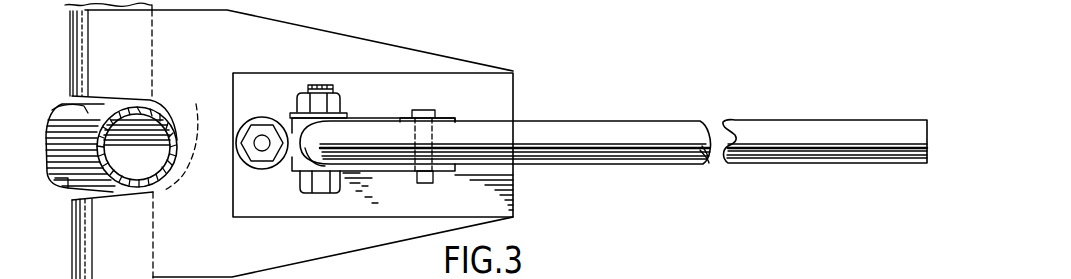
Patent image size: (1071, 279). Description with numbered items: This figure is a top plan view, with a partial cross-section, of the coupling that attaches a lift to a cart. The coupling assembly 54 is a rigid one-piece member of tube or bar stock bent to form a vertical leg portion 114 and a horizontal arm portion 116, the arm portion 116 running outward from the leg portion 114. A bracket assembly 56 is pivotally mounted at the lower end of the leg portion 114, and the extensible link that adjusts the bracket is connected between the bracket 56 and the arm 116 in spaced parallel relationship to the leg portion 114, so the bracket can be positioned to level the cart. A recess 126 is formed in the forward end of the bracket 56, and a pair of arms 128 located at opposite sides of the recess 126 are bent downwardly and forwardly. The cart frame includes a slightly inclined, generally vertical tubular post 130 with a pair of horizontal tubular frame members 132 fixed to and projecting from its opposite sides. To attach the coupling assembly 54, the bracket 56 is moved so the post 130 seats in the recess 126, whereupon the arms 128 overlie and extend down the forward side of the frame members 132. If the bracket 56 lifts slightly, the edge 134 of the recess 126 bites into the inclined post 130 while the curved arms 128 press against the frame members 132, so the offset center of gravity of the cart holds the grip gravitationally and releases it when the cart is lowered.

The coupling assembly 54 is at (628, 80).
The bracket assembly 56 is at (527, 220).
The vertical leg portion 114 is at (295, 166).
The horizontal arm portion 116 is at (657, 161).
The recess 126 is at (78, 115).
The arms 128 is at (126, 63).
The tubular post 130 is at (66, 182).
The horizontal tubular frame members 132 is at (68, 5).
The edge 134 is at (199, 98).